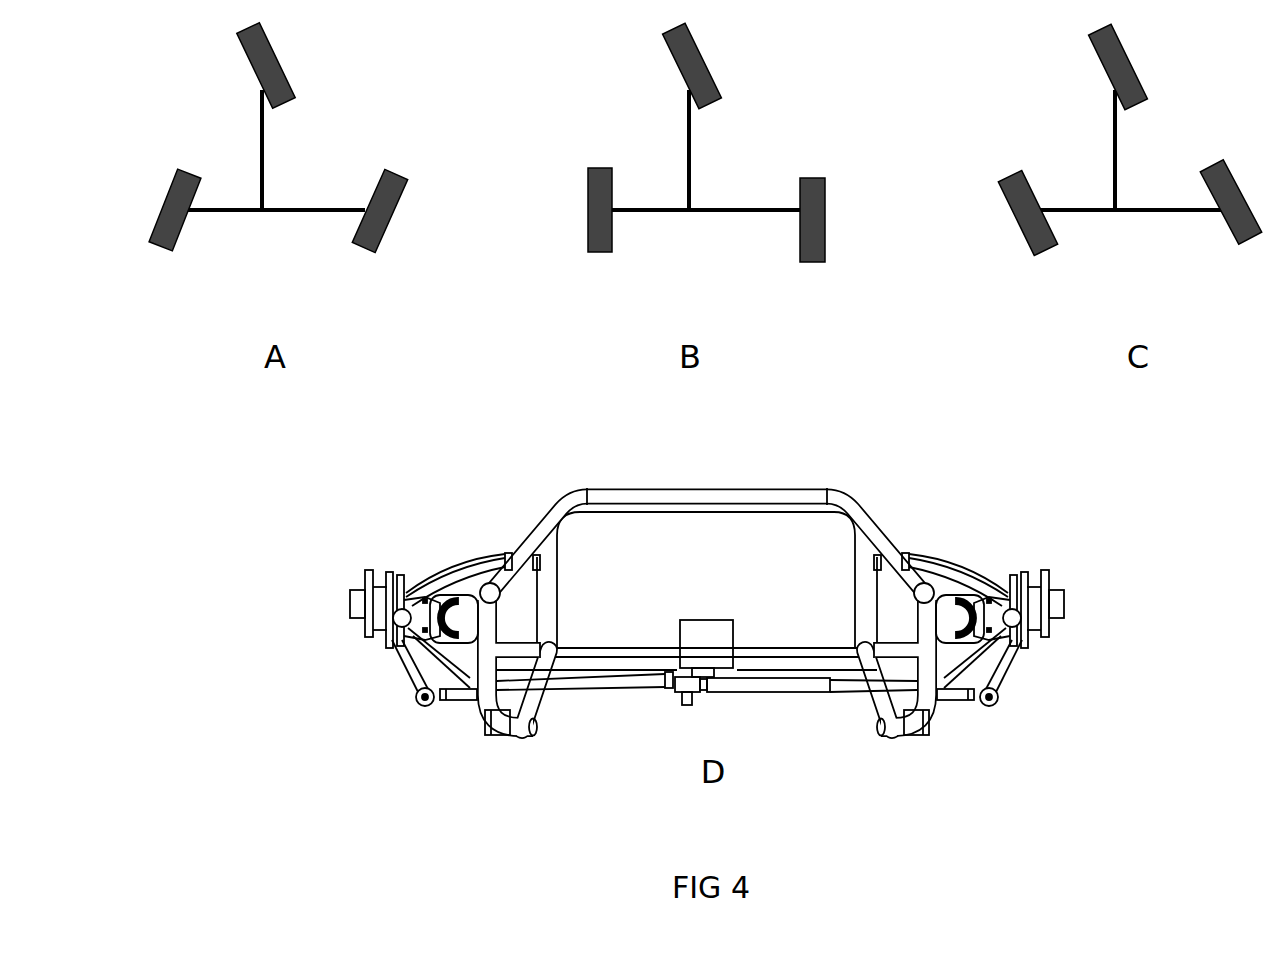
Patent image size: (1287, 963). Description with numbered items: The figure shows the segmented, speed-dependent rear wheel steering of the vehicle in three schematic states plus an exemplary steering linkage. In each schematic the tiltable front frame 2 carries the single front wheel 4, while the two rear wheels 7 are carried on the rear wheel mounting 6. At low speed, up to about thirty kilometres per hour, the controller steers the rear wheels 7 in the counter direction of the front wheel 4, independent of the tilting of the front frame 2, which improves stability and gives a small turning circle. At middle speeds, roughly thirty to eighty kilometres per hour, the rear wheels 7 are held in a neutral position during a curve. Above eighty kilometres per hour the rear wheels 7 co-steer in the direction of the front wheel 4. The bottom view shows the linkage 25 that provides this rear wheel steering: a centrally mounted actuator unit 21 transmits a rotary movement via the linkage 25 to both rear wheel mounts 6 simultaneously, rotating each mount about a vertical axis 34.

The front frame 2 is at (768, 541).
The front wheel 4 is at (692, 66).
The rear wheels 7 is at (700, 211).
The rear wheel mounting 6 is at (704, 652).
The vertical axis 34 is at (409, 586).
The actuator unit 21 is at (747, 662).
The linkage 25 is at (707, 696).